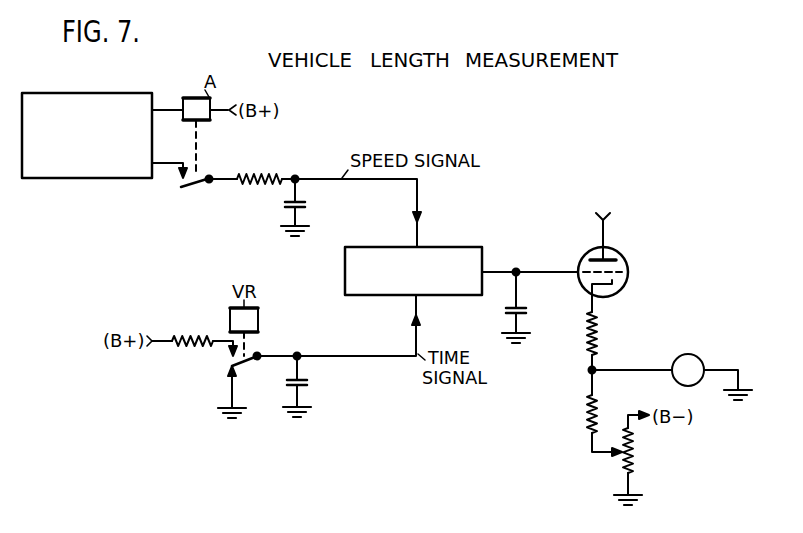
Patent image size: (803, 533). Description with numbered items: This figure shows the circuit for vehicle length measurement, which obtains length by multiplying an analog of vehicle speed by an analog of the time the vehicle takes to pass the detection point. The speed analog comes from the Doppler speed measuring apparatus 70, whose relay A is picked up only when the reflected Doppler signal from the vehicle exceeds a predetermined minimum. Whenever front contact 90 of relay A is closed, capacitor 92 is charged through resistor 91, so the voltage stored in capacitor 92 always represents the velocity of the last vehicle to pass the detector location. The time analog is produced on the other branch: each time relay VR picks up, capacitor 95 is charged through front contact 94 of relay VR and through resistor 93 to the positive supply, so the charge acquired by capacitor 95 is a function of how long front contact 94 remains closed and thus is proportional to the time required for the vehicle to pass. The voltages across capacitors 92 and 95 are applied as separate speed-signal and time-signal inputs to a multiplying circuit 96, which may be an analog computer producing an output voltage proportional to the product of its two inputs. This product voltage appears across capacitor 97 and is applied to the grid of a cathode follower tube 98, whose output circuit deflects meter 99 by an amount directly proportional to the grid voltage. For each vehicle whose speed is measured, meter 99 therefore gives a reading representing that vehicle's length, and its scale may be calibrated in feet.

The Doppler speed measuring apparatus 70 is at (97, 93).
The front contact of relay A 90 is at (191, 190).
The resistor 91 is at (268, 174).
The capacitor 92 is at (305, 204).
The resistor 93 is at (196, 322).
The front contact of relay VR 94 is at (242, 364).
The capacitor 95 is at (308, 386).
The multiplying circuit 96 is at (444, 246).
The capacitor 97 is at (527, 308).
The cathode follower tube 98 is at (626, 262).
The meter 99 is at (698, 361).